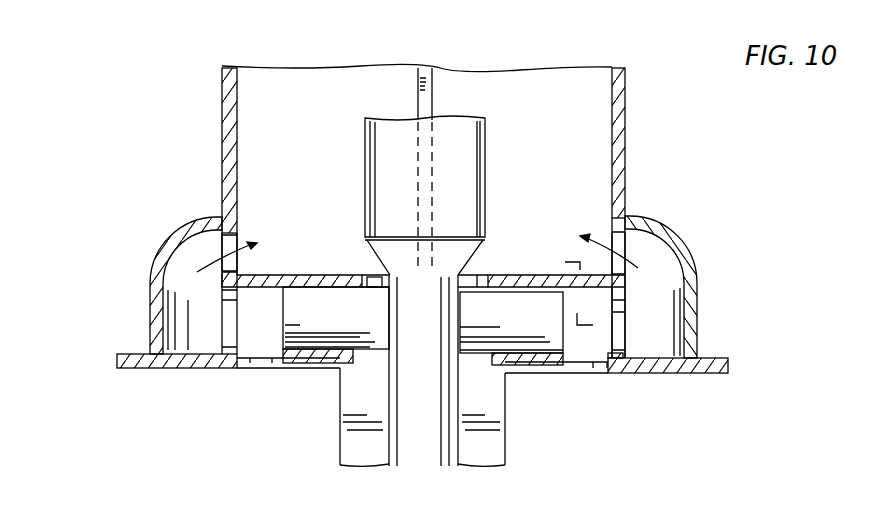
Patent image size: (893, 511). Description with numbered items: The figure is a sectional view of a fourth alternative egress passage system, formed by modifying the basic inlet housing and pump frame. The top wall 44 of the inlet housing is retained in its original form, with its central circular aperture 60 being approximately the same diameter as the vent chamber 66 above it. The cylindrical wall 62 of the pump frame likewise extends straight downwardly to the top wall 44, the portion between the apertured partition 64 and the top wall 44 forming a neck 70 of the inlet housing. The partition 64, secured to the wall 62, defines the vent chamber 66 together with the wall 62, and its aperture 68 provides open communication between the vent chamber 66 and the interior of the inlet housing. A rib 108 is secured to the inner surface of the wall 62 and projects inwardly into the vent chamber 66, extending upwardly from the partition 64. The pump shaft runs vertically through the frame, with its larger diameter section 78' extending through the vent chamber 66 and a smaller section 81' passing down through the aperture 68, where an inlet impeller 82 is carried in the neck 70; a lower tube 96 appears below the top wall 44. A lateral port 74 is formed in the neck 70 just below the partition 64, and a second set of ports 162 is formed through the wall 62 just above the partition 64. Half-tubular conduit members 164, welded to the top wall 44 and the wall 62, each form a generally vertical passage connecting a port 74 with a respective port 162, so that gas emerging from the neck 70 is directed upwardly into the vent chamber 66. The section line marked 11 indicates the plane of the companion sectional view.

The rib 108 is at (432, 93).
The vent chamber 66 is at (238, 111).
The cylindrical wall 62 is at (618, 135).
The larger diameter shaft section 78' is at (453, 195).
The half-tubular conduit member 164 is at (172, 243).
The second set of ports 162 is at (227, 233).
The inlet impeller 82 is at (316, 309).
The apertured partition 64 is at (355, 282).
The aperture 68 is at (378, 288).
The port 74 is at (620, 305).
The circular aperture 60 is at (244, 370).
The neck portion 70 is at (625, 345).
The top wall 44 is at (708, 368).
The lower tube 96 is at (347, 433).
The shaft section 81' is at (475, 376).
The section line 11- 11 is at (78, 257).